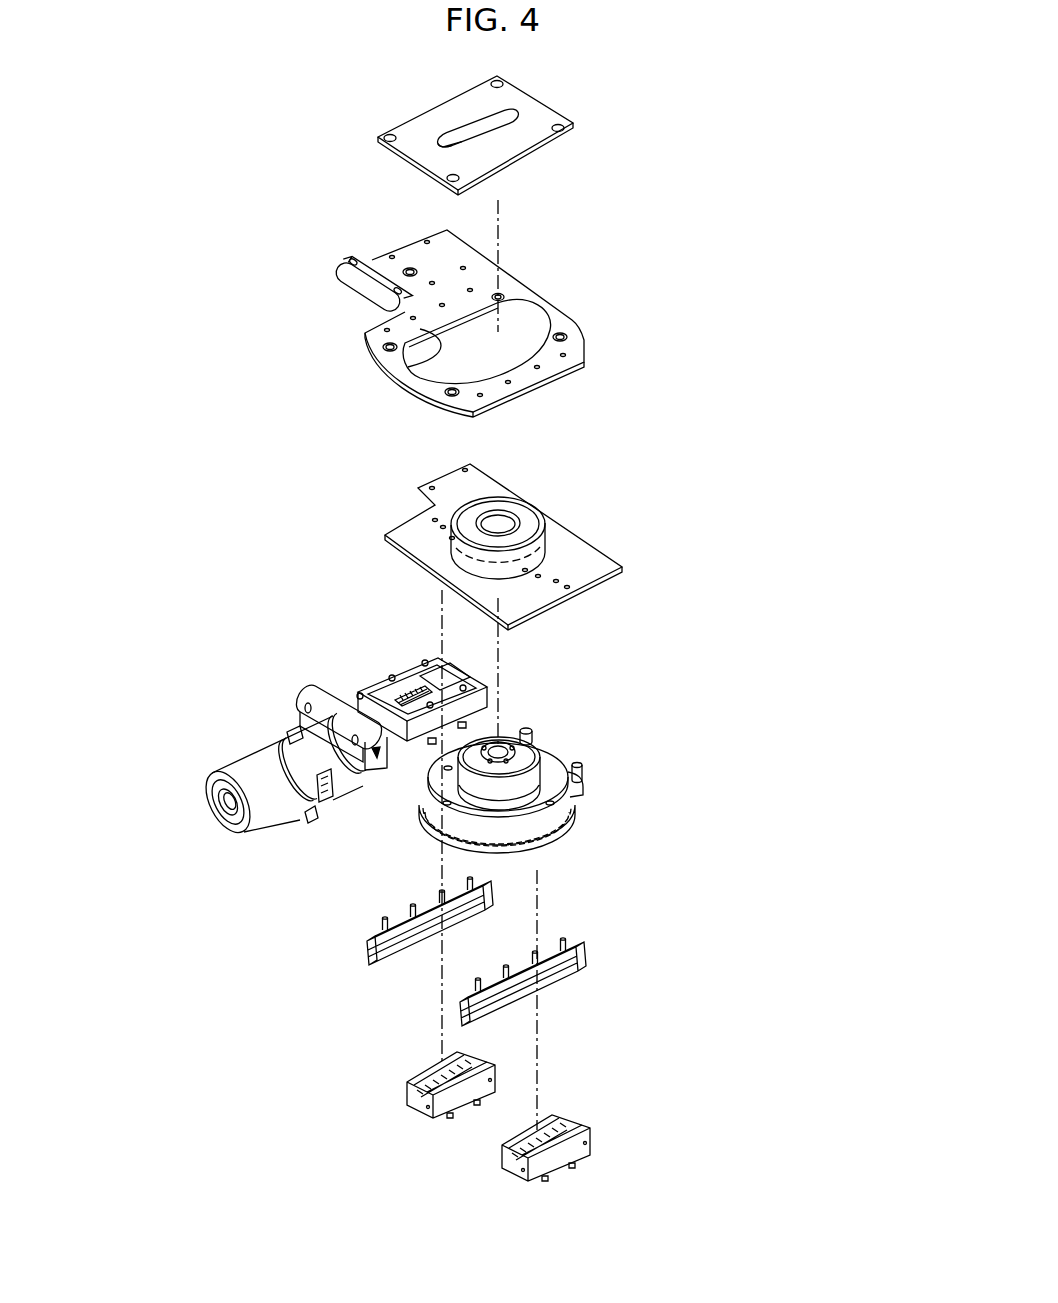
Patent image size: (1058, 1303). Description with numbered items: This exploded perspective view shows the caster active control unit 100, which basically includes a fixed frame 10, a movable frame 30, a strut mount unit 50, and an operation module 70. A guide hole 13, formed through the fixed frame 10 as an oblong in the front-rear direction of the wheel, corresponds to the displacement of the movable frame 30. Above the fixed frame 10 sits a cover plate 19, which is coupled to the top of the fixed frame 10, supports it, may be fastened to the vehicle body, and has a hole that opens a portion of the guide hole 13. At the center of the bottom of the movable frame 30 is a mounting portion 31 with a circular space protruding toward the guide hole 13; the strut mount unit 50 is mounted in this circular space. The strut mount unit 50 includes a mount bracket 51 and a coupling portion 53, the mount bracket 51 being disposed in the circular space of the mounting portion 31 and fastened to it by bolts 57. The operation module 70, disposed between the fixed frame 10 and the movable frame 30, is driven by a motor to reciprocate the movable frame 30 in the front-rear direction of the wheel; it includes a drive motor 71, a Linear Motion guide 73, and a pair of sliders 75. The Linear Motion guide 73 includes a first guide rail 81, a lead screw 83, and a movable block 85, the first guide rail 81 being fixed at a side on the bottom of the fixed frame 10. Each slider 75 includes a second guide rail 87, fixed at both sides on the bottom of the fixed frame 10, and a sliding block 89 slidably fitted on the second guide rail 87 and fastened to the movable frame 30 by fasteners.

The caster active control unit 100 is at (296, 117).
The fixed frame 10 is at (458, 326).
The guide hole 13 is at (408, 368).
The cover plate 19 is at (532, 146).
The movable frame 30 is at (503, 544).
The mounting portion 31 is at (532, 517).
The strut mount unit 50 is at (512, 753).
The mount bracket 51 is at (466, 786).
The coupling portion 53 is at (504, 747).
The bolts 57 is at (587, 772).
The operation module 70 is at (342, 785).
The drive motor 71 is at (248, 767).
The Linear Motion (LM) guide 73 is at (385, 697).
The sliders 75 is at (495, 1029).
The first guide rail 81 is at (452, 714).
The lead screw 83 is at (408, 703).
The movable block 85 is at (425, 686).
The second guide rail 87 is at (367, 946).
The sliding block 89 is at (405, 1088).